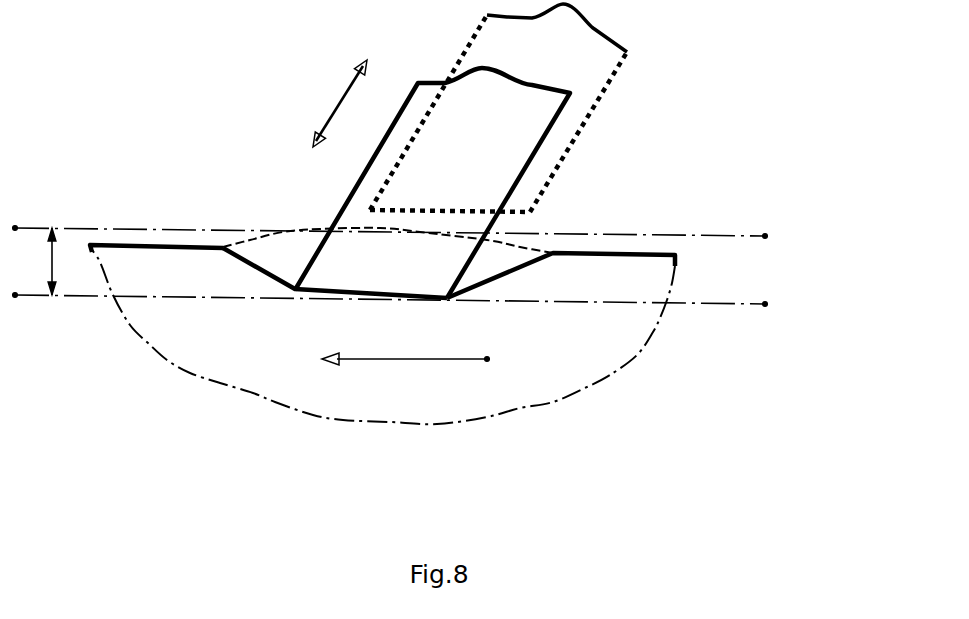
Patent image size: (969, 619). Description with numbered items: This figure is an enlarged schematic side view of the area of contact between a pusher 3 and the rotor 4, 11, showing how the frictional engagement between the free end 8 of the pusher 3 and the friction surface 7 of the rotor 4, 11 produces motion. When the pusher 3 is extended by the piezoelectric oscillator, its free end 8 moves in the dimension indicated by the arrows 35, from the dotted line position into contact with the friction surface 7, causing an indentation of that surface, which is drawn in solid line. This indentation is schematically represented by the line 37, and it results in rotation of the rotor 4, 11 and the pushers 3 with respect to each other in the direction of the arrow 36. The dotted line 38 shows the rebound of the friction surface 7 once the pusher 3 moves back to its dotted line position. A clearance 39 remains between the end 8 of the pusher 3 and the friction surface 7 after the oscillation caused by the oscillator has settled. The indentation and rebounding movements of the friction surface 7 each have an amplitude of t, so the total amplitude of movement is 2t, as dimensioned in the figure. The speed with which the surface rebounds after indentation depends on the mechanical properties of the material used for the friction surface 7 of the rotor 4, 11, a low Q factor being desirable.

The pusher 3 is at (477, 152).
The rotor 4 is at (383, 384).
The rotor 11 is at (378, 388).
The friction surface 7 is at (175, 233).
The free end 8 is at (378, 276).
The arrows 35 is at (340, 102).
The arrow 36 is at (445, 362).
The line 37 is at (250, 277).
The dotted line 38 is at (252, 243).
The clearance 39 is at (428, 225).
The total amplitude 2t is at (36, 261).